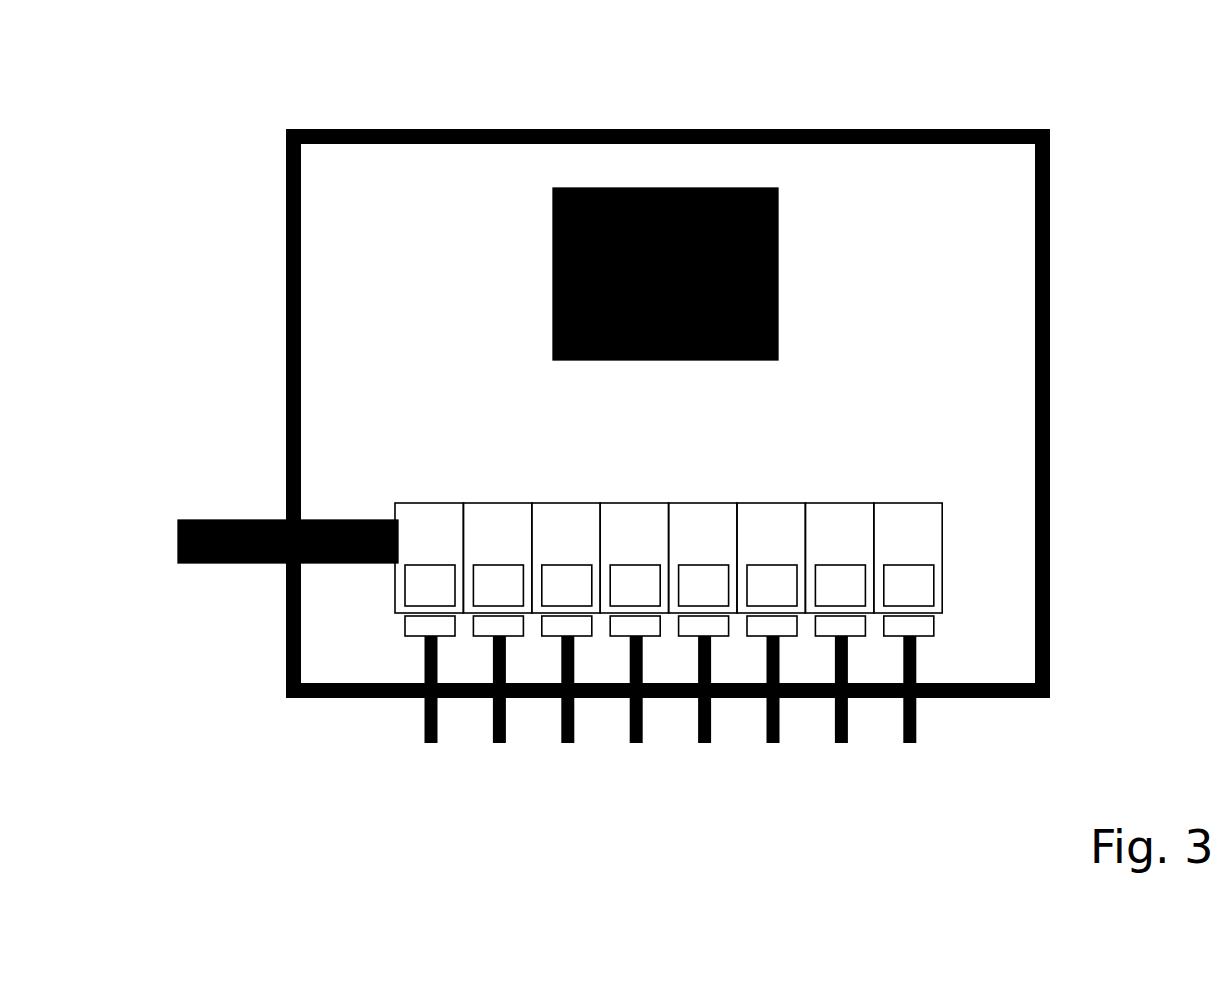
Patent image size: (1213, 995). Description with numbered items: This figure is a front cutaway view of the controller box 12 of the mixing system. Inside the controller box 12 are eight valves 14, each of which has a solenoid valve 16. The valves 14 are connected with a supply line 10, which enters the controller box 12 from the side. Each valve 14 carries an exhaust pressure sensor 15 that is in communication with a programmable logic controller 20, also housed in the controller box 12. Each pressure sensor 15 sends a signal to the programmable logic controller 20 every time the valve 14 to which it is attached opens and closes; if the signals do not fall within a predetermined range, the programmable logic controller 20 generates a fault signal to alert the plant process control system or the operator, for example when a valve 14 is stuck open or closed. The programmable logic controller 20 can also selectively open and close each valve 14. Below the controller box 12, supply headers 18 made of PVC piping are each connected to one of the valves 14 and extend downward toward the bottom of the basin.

The supply line 10 is at (240, 514).
The controller box 12 is at (1026, 116).
The valve 14 is at (433, 496).
The exhaust pressure sensor 15 is at (669, 585).
The solenoid valve 16 is at (669, 626).
The supply header 18 is at (488, 741).
The programmable logic controller 20 is at (790, 262).